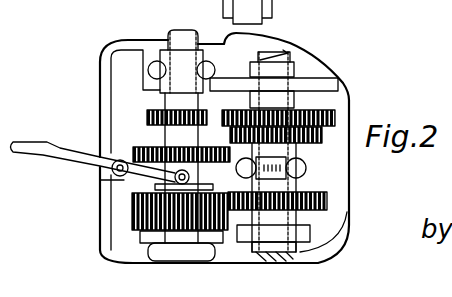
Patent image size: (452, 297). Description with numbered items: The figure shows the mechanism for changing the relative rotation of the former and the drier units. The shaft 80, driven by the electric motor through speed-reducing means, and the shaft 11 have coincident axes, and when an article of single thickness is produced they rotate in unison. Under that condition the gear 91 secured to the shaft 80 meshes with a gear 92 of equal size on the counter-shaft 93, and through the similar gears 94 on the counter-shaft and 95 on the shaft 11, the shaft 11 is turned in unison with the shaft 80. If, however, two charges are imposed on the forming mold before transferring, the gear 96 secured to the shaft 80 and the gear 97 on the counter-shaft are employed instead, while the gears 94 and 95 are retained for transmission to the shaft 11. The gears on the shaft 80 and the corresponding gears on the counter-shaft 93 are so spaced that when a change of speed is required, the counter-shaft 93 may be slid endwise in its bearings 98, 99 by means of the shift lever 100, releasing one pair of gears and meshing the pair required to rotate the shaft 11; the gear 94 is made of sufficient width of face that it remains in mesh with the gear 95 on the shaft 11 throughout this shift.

The shaft 11 is at (327, 245).
The shaft 80 is at (286, 51).
The gear 91 is at (335, 133).
The gear 92 is at (146, 147).
The counter-shaft 93 is at (182, 103).
The gear 94 is at (132, 212).
The gear 95 is at (322, 194).
The gear 96 is at (336, 118).
The gear 97 is at (122, 113).
The bearing 98 is at (178, 77).
The bearing 99 is at (150, 242).
The shift lever 100 is at (70, 158).